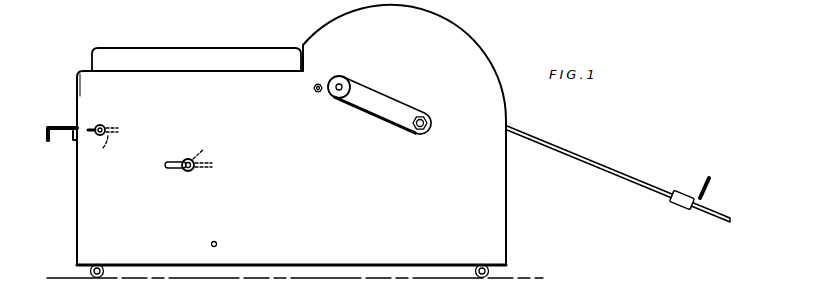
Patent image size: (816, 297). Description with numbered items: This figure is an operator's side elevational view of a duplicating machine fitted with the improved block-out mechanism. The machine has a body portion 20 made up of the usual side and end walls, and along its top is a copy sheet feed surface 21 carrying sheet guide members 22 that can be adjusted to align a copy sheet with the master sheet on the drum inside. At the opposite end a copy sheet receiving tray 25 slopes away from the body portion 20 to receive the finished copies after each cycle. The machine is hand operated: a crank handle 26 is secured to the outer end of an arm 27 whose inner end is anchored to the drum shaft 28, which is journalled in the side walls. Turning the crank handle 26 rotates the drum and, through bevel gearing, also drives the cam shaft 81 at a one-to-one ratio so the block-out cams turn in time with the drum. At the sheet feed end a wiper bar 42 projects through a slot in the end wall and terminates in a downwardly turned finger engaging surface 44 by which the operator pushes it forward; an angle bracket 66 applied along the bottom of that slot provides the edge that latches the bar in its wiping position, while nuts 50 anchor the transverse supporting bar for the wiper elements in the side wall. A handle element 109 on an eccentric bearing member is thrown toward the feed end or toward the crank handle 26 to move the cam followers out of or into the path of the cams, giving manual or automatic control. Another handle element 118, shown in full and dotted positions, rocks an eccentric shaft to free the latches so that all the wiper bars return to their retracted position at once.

The body portion 20 is at (481, 40).
The copy sheet feed surface 21 is at (233, 69).
The sheet guide members 22 is at (161, 46).
The copy sheet receiving tray 25 is at (636, 178).
The crank handle 26 is at (335, 97).
The arm 27 is at (381, 114).
The drum shaft 28 is at (431, 126).
The bar 42 is at (71, 119).
The finger engaging surface 44 is at (48, 131).
The nuts 50 is at (320, 79).
The angle bracket 66 is at (73, 141).
The cam shaft 81 is at (216, 242).
The handle element 109 is at (177, 160).
The handle element 118 is at (95, 139).